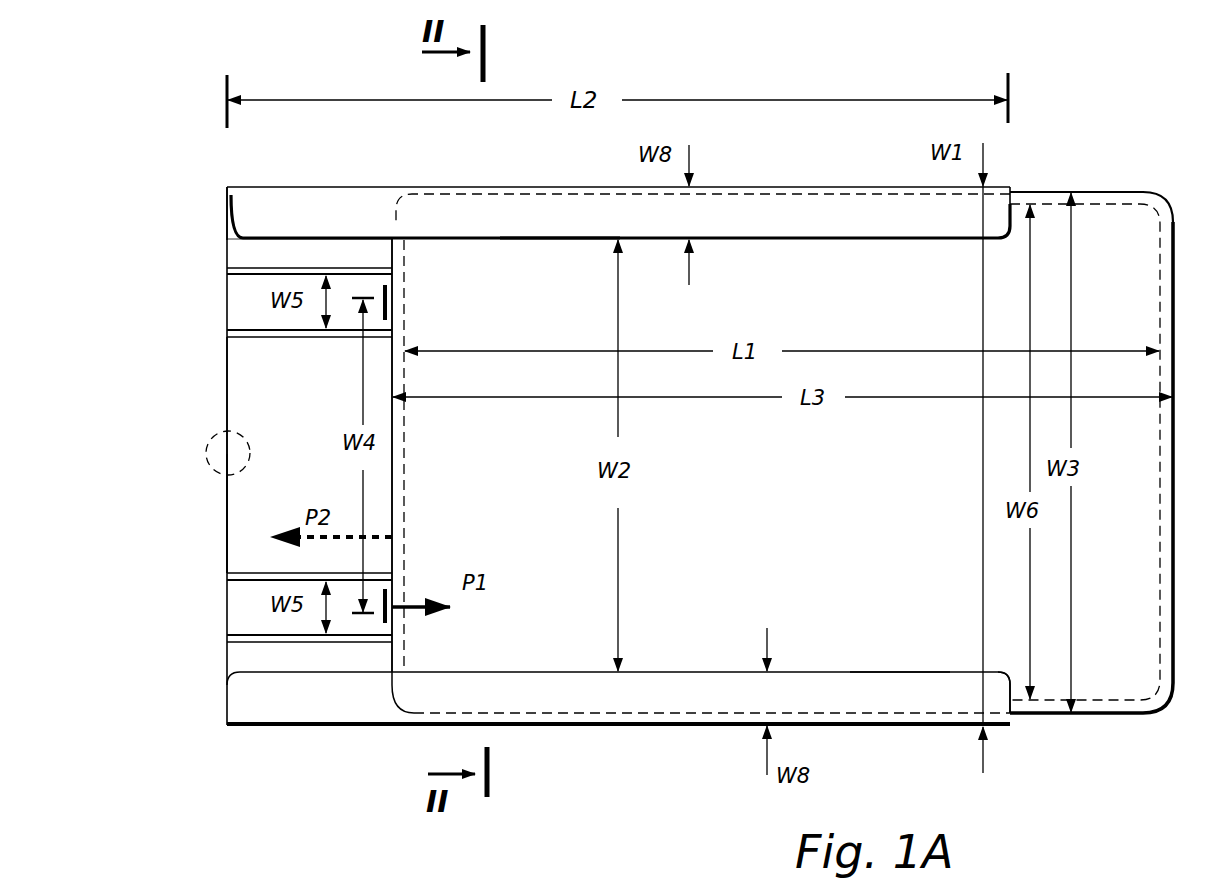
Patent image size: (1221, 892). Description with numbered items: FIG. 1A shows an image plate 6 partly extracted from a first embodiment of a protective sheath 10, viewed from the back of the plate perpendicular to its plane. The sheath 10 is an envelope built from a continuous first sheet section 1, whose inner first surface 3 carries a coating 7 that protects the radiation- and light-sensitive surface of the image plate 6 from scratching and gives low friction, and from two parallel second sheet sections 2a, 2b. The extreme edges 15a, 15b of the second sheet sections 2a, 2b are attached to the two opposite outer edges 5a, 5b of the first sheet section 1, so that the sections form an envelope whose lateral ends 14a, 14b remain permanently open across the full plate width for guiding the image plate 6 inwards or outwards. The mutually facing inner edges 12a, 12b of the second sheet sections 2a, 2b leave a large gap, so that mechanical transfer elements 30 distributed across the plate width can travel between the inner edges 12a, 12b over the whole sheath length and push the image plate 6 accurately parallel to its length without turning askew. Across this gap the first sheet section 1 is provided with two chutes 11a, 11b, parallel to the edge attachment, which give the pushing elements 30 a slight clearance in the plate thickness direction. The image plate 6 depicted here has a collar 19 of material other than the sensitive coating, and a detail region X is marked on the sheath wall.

The first sheet section 1 is at (335, 400).
The second sheet section 2a is at (906, 230).
The second sheet section 2b is at (333, 717).
The first surface 3 is at (255, 375).
The outer edge of the first sheet section 5a is at (768, 193).
The outer edge of the first sheet section 5b is at (612, 728).
The image plate 6 is at (890, 483).
The coating 7 is at (255, 549).
The protective sheath 10 is at (340, 203).
The chute 11a is at (245, 298).
The chute 11b is at (238, 608).
The inner edge of the second sheet section 12a is at (558, 240).
The inner edge of the second sheet section 12b is at (893, 672).
The open end 14a is at (220, 216).
The open end 14b is at (1030, 725).
The extreme edge of the second sheet section 15a is at (768, 193).
The extreme edge of the second sheet section 15b is at (612, 752).
The collar 19 is at (1157, 712).
The mechanical transfer element 30 is at (388, 300).
The detail region X is at (212, 470).